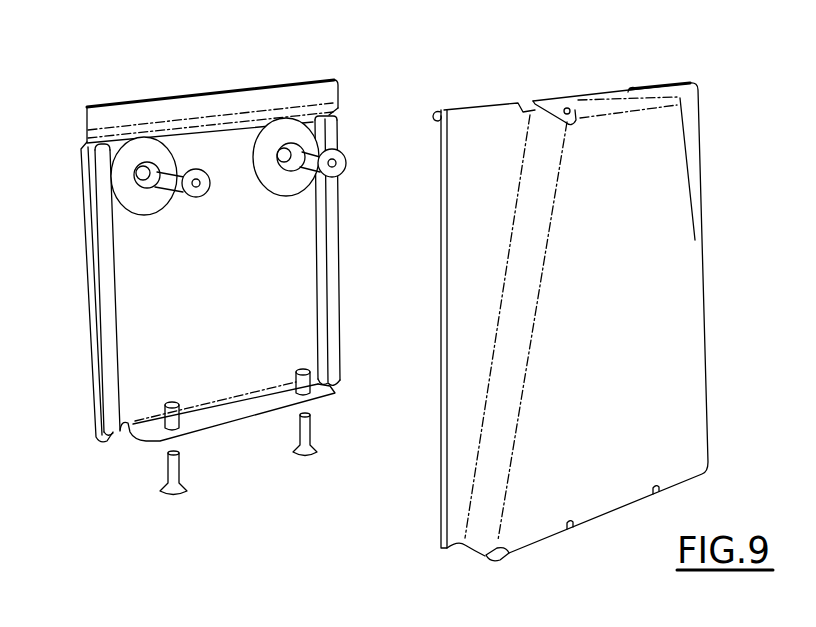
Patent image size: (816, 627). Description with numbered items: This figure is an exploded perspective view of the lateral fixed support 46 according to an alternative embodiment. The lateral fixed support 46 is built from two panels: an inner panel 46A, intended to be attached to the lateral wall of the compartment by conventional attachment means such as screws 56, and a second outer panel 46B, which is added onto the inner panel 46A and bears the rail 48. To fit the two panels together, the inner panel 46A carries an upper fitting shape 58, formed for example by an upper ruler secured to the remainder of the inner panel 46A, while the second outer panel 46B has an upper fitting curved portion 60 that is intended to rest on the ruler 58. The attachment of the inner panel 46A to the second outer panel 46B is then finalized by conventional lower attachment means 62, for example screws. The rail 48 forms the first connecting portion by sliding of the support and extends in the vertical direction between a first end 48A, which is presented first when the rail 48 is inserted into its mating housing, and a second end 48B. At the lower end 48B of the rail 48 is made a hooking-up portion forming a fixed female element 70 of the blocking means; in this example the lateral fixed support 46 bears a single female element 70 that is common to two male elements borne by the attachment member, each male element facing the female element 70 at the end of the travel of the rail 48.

The lateral fixed support 46 is at (58, 240).
The inner panel 46A is at (153, 313).
The second outer panel 46B is at (690, 167).
The rail 48 is at (643, 350).
The first end 48A is at (577, 102).
The second end 48B is at (678, 488).
The screws 56 is at (172, 163).
The upper fitting shape 58 is at (115, 115).
The upper fitting curved portion 60 is at (672, 87).
The lower attachment means 62 is at (170, 468).
The female element 70 is at (607, 517).